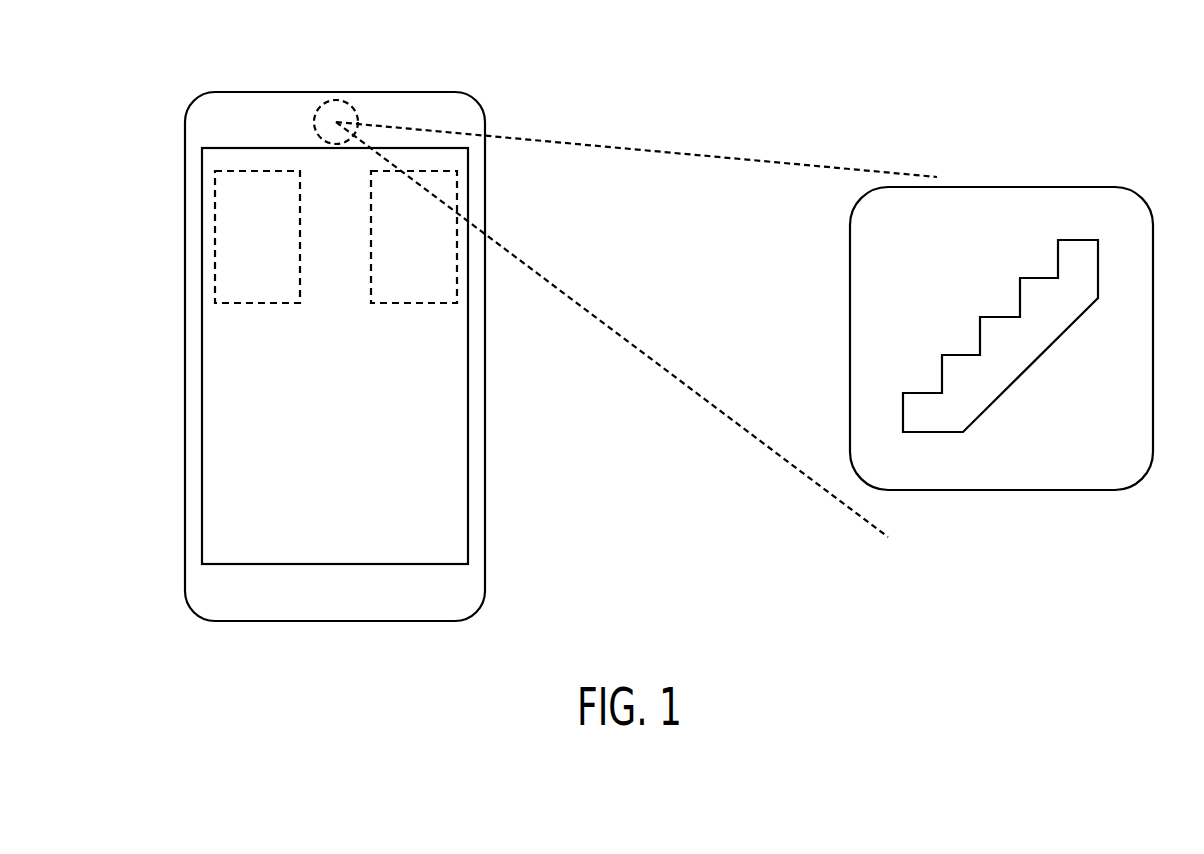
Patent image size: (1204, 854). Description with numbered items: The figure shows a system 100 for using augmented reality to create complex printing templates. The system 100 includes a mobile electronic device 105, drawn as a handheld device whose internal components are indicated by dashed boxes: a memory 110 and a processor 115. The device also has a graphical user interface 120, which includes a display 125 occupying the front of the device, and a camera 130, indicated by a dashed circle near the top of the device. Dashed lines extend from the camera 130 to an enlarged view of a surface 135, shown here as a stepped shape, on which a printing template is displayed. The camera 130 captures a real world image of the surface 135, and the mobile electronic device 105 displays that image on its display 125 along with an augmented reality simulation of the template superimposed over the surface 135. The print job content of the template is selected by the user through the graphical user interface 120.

The system 100 is at (648, 78).
The mobile electronic device 105 is at (228, 92).
The memory 110 is at (273, 252).
The processor 115 is at (429, 252).
The graphical user interface 120 is at (468, 505).
The display 125 is at (350, 370).
The camera 130 is at (337, 98).
The surface 135 is at (1003, 390).